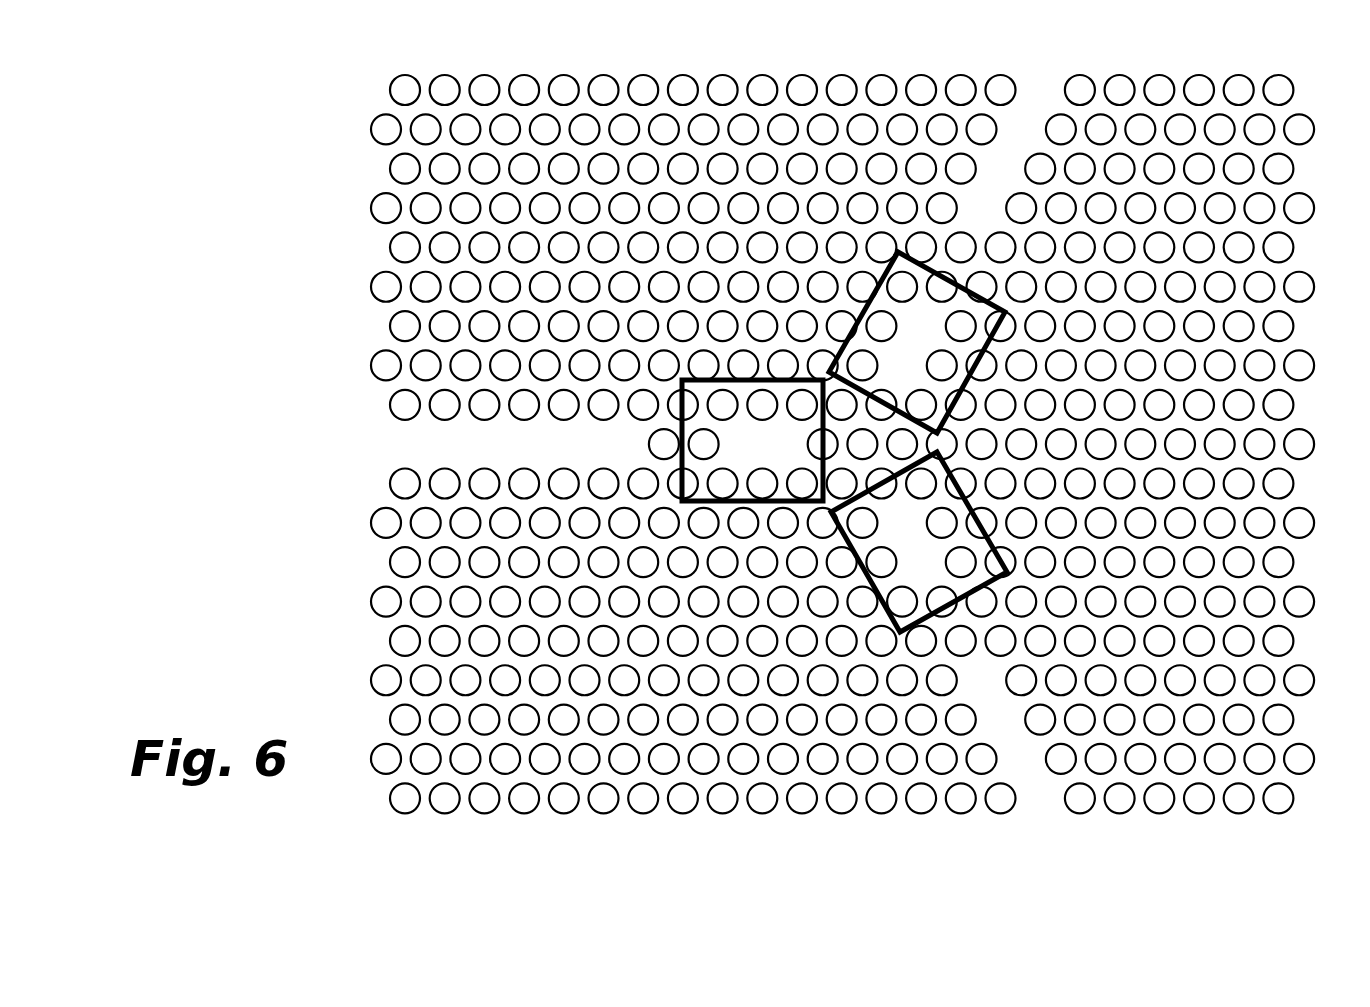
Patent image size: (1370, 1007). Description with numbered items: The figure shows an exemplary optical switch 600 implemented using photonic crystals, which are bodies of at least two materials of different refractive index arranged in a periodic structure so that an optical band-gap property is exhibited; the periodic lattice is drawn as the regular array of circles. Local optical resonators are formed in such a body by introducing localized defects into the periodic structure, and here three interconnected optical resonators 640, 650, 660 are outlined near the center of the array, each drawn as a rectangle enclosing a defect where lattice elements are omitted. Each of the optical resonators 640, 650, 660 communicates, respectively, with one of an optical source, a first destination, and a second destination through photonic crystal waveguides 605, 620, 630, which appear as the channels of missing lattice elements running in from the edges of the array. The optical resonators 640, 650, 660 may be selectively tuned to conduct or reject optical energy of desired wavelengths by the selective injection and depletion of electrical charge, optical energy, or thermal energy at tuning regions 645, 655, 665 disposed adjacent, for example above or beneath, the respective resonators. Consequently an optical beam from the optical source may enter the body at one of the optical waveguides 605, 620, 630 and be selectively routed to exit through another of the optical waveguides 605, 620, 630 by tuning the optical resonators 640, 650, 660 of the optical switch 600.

The optical switch 600 is at (318, 126).
The photonic crystal waveguide 605 is at (1044, 831).
The photonic crystal waveguide 620 is at (324, 449).
The photonic crystal waveguide 630 is at (1038, 48).
The optical resonator 640 is at (917, 227).
The tuning region 645 is at (804, 194).
The optical resonator 650 is at (919, 656).
The tuning region 655 is at (824, 712).
The optical resonator 660 is at (516, 430).
The tuning region 665 is at (485, 373).